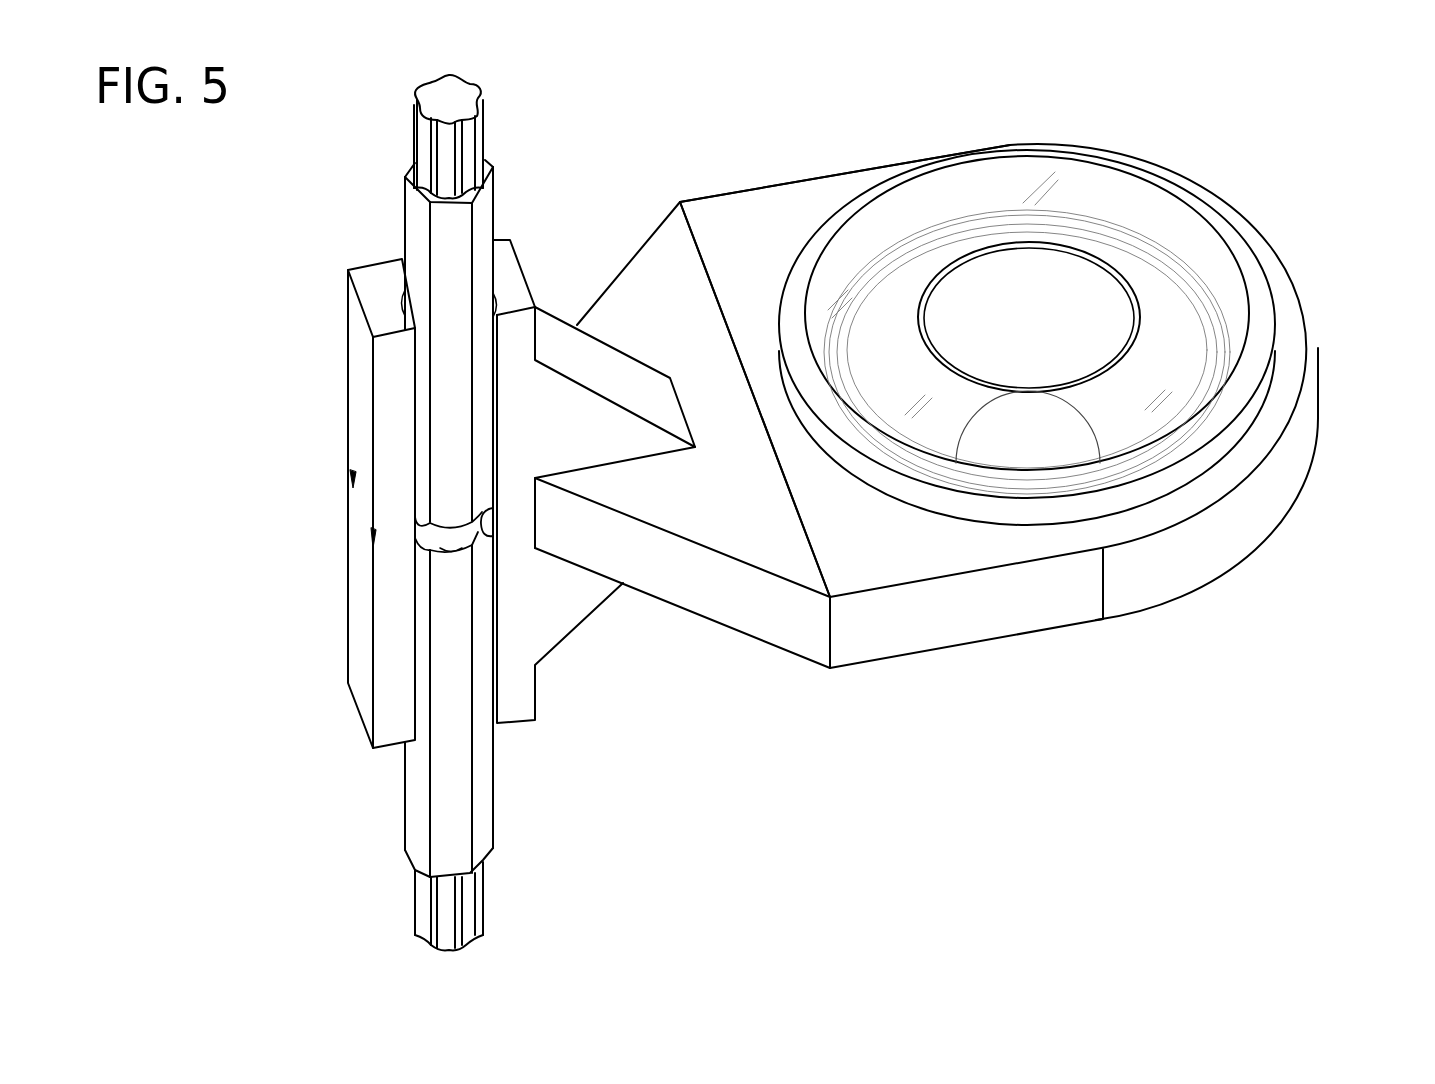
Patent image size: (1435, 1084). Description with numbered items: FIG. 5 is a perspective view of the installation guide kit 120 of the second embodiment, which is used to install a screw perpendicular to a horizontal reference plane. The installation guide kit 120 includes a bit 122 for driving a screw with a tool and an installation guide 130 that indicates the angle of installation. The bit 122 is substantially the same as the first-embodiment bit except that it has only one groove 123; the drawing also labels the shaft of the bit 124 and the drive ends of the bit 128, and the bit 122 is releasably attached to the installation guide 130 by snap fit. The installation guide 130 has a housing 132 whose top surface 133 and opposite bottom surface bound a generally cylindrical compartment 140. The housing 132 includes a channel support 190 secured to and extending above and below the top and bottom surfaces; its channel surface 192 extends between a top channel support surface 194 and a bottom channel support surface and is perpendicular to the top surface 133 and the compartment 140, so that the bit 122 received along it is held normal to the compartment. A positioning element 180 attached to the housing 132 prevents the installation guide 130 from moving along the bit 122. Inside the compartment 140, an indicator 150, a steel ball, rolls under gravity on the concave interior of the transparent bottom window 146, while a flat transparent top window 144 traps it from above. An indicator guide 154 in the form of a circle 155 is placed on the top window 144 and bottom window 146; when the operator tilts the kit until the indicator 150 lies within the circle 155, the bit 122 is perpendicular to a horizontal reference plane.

The installation guide kit 120 is at (985, 463).
The bit 122 is at (412, 500).
The groove 123 is at (448, 543).
The hex shaft 124 is at (477, 803).
The torx drive head 128 is at (497, 90).
The installation guide 130 is at (926, 511).
The housing 132 is at (628, 262).
The top surface 133 is at (760, 239).
The compartment 140 is at (1054, 339).
The top window 144 is at (1108, 197).
The bottom window 146 is at (882, 396).
The indicator 150 is at (1122, 436).
The indicator guide 154 is at (1112, 239).
The circle 155 is at (968, 252).
The positioning element 180 is at (418, 528).
The channel support 190 is at (446, 475).
The channel surface 192 is at (570, 440).
The top channel support surface 194 is at (377, 277).